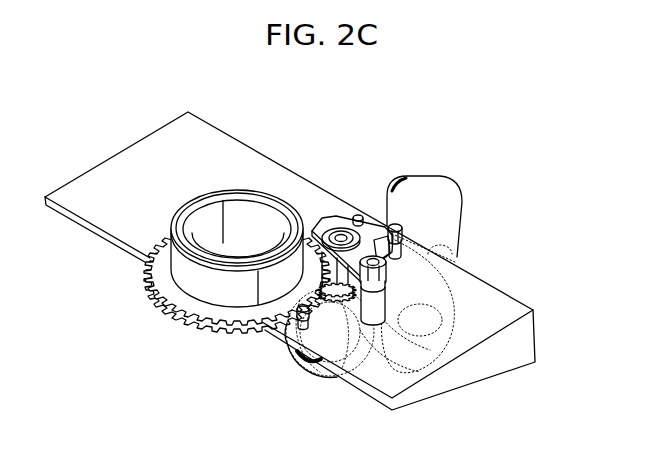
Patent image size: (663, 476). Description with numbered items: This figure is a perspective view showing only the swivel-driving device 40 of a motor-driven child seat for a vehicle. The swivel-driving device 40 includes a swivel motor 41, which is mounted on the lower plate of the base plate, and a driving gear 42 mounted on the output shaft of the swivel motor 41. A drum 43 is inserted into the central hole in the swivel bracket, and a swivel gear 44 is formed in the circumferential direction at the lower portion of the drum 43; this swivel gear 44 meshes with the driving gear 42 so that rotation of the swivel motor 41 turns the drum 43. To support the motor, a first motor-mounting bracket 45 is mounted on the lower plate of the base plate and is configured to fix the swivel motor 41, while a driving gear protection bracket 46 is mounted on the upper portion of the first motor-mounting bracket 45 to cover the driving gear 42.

The swivel-driving device 40 is at (321, 265).
The swivel motor 41 is at (450, 203).
The driving gear 42 is at (361, 305).
The drum 43 is at (268, 213).
The swivel gear 44 is at (202, 328).
The first motor-mounting bracket 45 is at (240, 162).
The driving gear protection bracket 46 is at (333, 220).